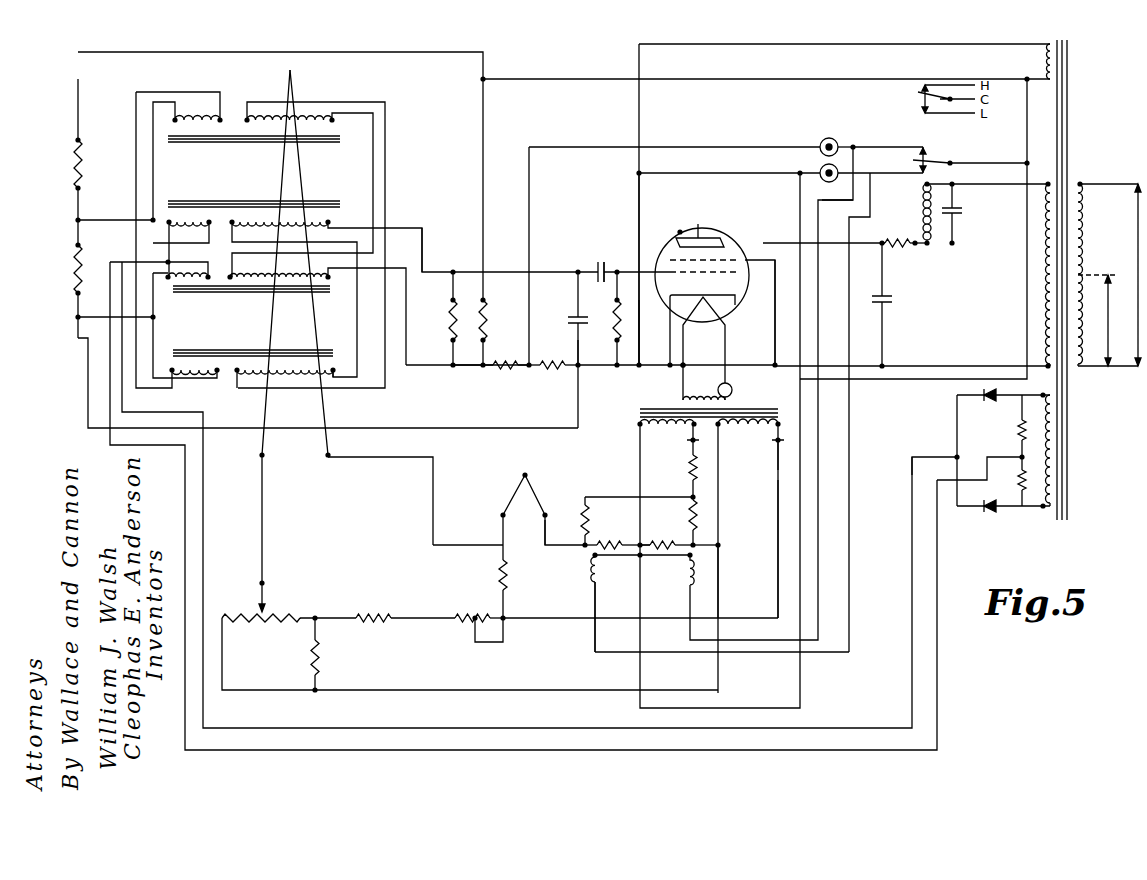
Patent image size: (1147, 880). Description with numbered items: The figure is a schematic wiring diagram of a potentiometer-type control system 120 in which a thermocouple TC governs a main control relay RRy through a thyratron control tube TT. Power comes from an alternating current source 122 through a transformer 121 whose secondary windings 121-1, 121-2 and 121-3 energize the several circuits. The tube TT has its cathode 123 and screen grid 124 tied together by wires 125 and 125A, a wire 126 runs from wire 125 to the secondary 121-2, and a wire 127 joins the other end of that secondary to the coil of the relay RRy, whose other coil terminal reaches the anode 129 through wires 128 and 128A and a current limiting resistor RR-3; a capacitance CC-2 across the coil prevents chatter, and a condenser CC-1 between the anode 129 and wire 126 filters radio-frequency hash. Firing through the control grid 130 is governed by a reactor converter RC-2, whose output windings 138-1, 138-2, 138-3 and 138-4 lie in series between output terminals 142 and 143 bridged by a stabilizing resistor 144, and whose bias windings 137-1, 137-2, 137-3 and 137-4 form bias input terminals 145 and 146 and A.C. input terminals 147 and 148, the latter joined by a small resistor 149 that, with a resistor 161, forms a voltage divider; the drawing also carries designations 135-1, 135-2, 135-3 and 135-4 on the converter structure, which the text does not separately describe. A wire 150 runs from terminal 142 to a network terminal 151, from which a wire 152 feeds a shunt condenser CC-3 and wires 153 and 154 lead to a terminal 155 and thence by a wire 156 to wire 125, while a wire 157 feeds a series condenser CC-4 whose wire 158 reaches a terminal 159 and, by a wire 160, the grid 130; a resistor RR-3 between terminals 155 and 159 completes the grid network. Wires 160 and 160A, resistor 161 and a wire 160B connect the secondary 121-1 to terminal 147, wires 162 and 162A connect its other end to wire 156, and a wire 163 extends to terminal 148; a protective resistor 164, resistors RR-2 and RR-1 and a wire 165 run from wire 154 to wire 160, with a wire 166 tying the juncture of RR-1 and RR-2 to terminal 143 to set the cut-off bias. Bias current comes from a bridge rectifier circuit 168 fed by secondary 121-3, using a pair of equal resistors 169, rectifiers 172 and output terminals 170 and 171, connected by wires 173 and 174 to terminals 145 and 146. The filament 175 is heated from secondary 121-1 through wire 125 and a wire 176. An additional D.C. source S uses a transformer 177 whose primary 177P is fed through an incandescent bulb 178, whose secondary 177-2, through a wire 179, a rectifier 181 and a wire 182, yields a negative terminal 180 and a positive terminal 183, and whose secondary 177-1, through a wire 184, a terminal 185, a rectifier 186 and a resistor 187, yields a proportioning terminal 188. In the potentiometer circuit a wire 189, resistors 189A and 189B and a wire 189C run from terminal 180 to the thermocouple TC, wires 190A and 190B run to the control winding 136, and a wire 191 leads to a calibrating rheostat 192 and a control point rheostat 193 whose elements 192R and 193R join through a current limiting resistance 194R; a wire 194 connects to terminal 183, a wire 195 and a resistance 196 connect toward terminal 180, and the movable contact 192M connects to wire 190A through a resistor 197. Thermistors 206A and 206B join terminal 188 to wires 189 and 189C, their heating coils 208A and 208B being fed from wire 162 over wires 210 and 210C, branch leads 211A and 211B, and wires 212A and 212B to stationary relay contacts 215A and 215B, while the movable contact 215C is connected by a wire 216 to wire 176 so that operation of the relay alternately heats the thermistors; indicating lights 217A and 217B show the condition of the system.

The reactor converter RC-2 is at (128, 118).
The wire 160A is at (372, 52).
The resistor 161 is at (74, 142).
The wire 160B is at (92, 216).
The small resistor 149 is at (72, 282).
The A.C. input terminal 147 is at (150, 226).
The A.C. input terminal 148 is at (156, 317).
The wire 163 is at (86, 368).
The bias input terminal 145 is at (134, 174).
The bias winding 137-2 is at (199, 128).
The relay core 135-2 is at (243, 143).
The output winding 138-2 is at (312, 130).
The bias winding 137-1 is at (177, 220).
The relay core 135-1 is at (246, 194).
The output winding 138-1 is at (316, 220).
The bias input terminal 146 is at (170, 262).
The bias winding 137-4 is at (194, 282).
The relay core 135-4 is at (236, 293).
The output winding 138-4 is at (296, 282).
The bias winding 137-3 is at (177, 366).
The relay core 135-3 is at (236, 355).
The output winding 138-3 is at (282, 366).
The control winding 136 is at (330, 454).
The wire 191 is at (263, 534).
The control point rheostat 193 is at (268, 610).
The resistance element 193R is at (261, 624).
The resistance 196 is at (320, 656).
The wire 195 is at (390, 694).
The intermediate current limiting resistance 194R is at (391, 618).
The resistance element 192R is at (470, 619).
The calibrating rheostat 192 is at (456, 627).
The movable contact 192M is at (474, 642).
The resistor 197 is at (492, 568).
The wire 190B is at (432, 479).
The wire 190A is at (502, 540).
The thermocouple TC is at (510, 496).
The wire 189C is at (540, 536).
The thermistor 206B is at (582, 506).
The wire 184 is at (638, 478).
The resistor 189B is at (616, 538).
The resistor 189A is at (663, 543).
The terminal 185 is at (648, 542).
The thermistor 206A is at (692, 518).
The resistor 187 is at (690, 465).
The terminal 188 is at (692, 489).
The rectifier 186 is at (689, 442).
The secondary 177-1 is at (643, 438).
The additional D.C. source S is at (626, 462).
The secondary 177-2 is at (776, 445).
The rectifier 181 is at (776, 463).
The wire 179 is at (726, 501).
The negative terminal 180 is at (720, 545).
The wire 189 is at (720, 551).
The wire 182 is at (771, 544).
The positive terminal 183 is at (776, 618).
The wire 194 is at (542, 620).
The branch lead 211B is at (618, 559).
The heating coil 208B is at (589, 573).
The wire 212B is at (597, 647).
The branch lead 211A is at (684, 560).
The heating coil 208A is at (686, 576).
The wire 212A is at (688, 604).
The wire 210C is at (735, 707).
The output terminal 142 is at (452, 270).
The wire 150 is at (505, 268).
The high value stabilizing resistor 144 is at (445, 306).
The output terminal 143 is at (446, 368).
The wire 165 is at (486, 142).
The resistor RR-1 is at (485, 312).
The wire 166 is at (454, 380).
The resistor RR-2 is at (499, 372).
The protective resistor 164 is at (548, 372).
The network terminal 151 is at (575, 275).
The wire 152 is at (575, 301).
The shunt condenser CC-3 is at (574, 323).
The wire 153 is at (576, 350).
The wire 154 is at (584, 370).
The series condenser CC-4 is at (598, 260).
The wire 157 is at (588, 274).
The wire 158 is at (615, 268).
The terminal 159 is at (620, 274).
The resistor RR-3 is at (616, 338).
The terminal 155 is at (619, 367).
The wire 156 is at (634, 372).
The wire 160 is at (553, 80).
The wire 162 is at (738, 44).
The wire 162A is at (637, 197).
The wire 210 is at (686, 173).
The control tube TT is at (679, 230).
The plate or anode 129 is at (698, 225).
The control grid 130 is at (672, 276).
The screen grid 124 is at (744, 260).
The filament 175 is at (716, 322).
The cathode 123 is at (768, 298).
The wire 125A is at (776, 306).
The wire 125 is at (757, 354).
The wire 128A is at (763, 243).
The primary 177P is at (696, 398).
The transformer 177 is at (678, 398).
The small incandescent bulb 178 is at (733, 391).
The indicating light 217A is at (828, 136).
The indicating light 217B is at (821, 168).
The stationary relay contact 215A is at (912, 146).
The stationary relay contact 215B is at (902, 173).
The movable relay contact 215C is at (934, 160).
The wire 216 is at (970, 163).
The wire 176 is at (1025, 121).
The wire 127 is at (968, 186).
The main control relay RRy is at (930, 246).
The wire 128 is at (906, 246).
The capacitance CC-2 is at (958, 216).
The condenser CC-1 is at (894, 304).
The wire 126 is at (916, 366).
The control system 120 is at (1058, 280).
The transformer 121 is at (1067, 398).
The secondary winding 121-1 is at (1042, 52).
The secondary winding 121-2 is at (1042, 299).
The secondary winding 121-3 is at (1051, 456).
The alternating current source 122 is at (1088, 368).
The bridge rectifier circuit 168 is at (946, 418).
The rectifiers 172 is at (982, 400).
The equal value resistors 169 is at (1020, 428).
The output terminal 170 is at (1018, 457).
The output terminal 171 is at (953, 455).
The wire 173 is at (927, 681).
The wire 174 is at (910, 528).